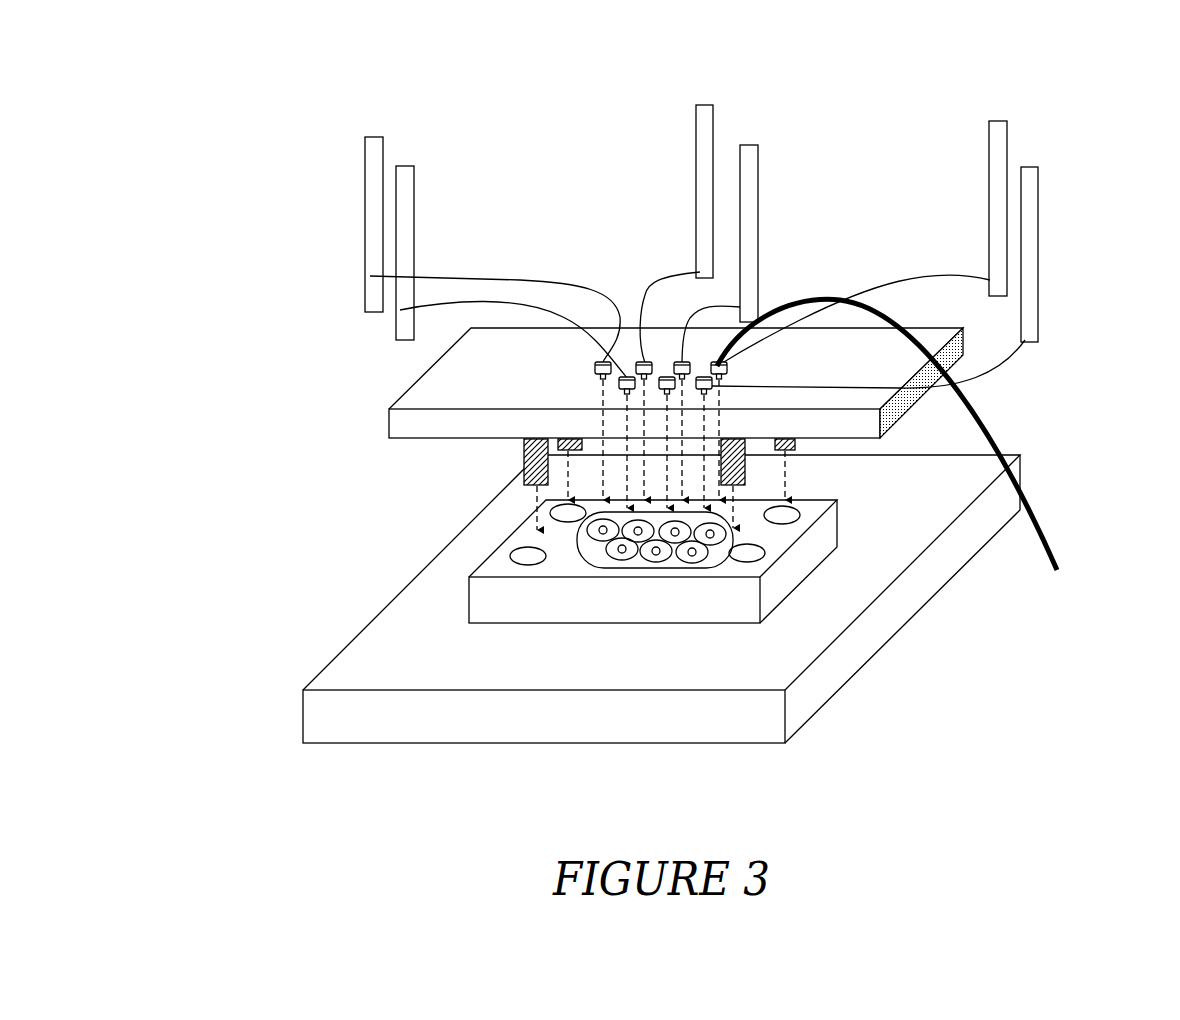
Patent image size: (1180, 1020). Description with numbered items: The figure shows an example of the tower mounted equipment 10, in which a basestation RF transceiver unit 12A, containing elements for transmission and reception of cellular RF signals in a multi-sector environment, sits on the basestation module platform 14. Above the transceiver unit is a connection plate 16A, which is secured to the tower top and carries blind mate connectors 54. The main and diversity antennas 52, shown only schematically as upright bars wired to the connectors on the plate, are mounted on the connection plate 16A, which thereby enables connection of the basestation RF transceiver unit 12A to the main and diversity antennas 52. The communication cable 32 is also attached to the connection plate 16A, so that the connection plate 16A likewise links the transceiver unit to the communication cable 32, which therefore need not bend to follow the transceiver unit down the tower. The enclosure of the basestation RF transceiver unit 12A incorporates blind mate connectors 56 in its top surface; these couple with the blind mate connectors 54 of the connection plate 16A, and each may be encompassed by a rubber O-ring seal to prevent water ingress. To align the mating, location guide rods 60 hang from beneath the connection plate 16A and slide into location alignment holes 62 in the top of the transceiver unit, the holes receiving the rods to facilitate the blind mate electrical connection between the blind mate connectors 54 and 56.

The tower mounted equipment 10 is at (212, 145).
The basestation RF transceiver unit 12A is at (490, 577).
The basestation module platform 14 is at (340, 653).
The connection plate 16A is at (423, 397).
The communication cable 32 is at (1060, 533).
The main and diversity antennas 52 is at (395, 257).
The blind mate connectors 54 is at (580, 360).
The blind mate connectors 56 is at (692, 552).
The location guide rods 60 is at (750, 467).
The location alignment holes 62 is at (760, 548).